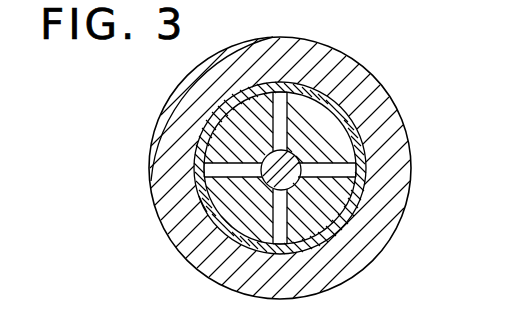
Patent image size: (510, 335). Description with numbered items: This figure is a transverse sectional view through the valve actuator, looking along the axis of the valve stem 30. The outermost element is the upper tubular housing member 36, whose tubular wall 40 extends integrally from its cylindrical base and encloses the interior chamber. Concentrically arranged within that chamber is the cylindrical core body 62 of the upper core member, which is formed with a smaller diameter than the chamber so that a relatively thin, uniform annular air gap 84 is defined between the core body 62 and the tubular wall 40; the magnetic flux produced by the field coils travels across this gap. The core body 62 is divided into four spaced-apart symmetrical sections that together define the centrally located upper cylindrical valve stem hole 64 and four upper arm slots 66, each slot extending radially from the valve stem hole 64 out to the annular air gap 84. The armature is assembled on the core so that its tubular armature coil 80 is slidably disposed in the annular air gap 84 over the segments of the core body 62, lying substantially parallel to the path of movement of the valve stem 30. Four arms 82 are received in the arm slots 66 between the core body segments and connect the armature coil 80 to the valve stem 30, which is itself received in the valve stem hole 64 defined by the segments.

The valve stem 30 is at (326, 232).
The upper tubular housing member 36 is at (402, 112).
The tubular wall 40 is at (401, 151).
The cylindrical core body 62 is at (318, 223).
The upper cylindrical valve stem hole 64 is at (265, 169).
The upper arm slots 66 is at (284, 94).
The tubular armature coil 80 is at (337, 110).
The arms 82 is at (276, 118).
The annular air gap 84 is at (205, 206).